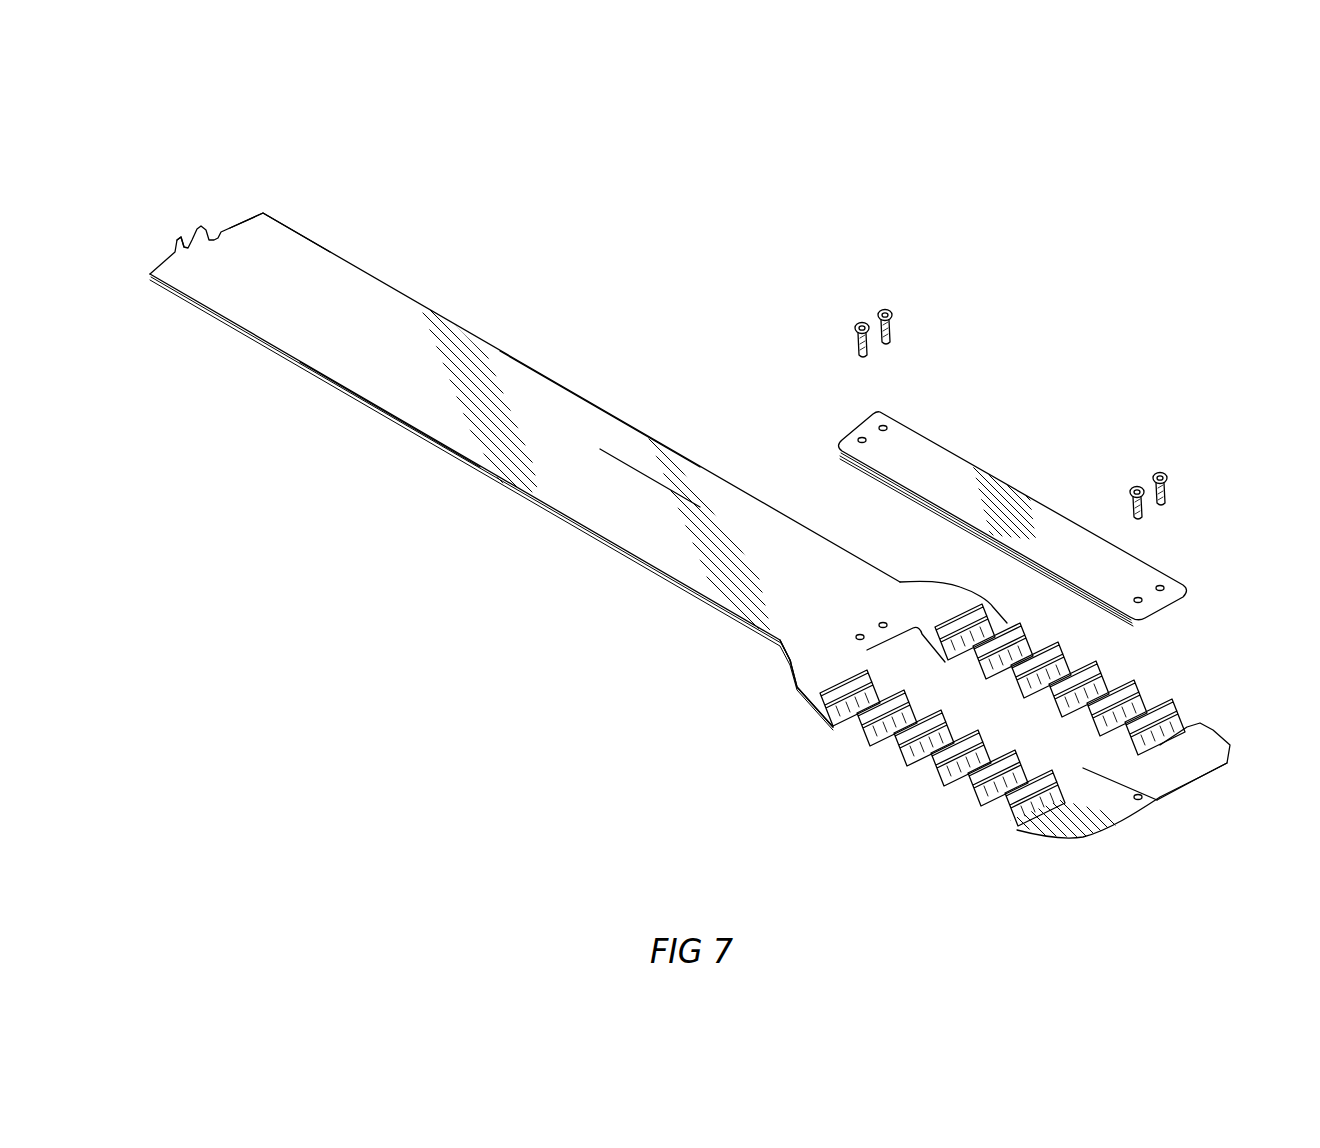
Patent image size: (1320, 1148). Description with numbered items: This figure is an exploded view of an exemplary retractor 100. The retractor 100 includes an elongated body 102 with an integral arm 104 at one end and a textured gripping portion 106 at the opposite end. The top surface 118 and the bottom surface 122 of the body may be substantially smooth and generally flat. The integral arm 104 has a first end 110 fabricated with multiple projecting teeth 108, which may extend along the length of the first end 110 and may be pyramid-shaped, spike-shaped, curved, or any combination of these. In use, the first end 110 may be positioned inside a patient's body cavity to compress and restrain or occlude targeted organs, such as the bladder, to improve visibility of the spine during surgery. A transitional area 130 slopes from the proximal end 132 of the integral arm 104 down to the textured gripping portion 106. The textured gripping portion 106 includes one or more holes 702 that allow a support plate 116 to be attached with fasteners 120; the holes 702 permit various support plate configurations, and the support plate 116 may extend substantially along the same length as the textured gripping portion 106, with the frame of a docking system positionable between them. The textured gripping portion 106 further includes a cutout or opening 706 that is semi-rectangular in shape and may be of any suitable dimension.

The retractor 100 is at (1236, 94).
The elongated body 102 is at (997, 918).
The integral arm 104 is at (533, 370).
The textured gripping portion 106 is at (823, 742).
The teeth 108 is at (180, 242).
The first end 110 is at (371, 240).
The support plate 116 is at (973, 470).
The top surface 118 is at (400, 382).
The fasteners 120 is at (883, 307).
The bottom surface 122 is at (657, 575).
The transitional area 130 is at (818, 668).
The proximal end 132 is at (893, 602).
The holes 702 is at (1160, 782).
The opening 706 is at (1087, 760).